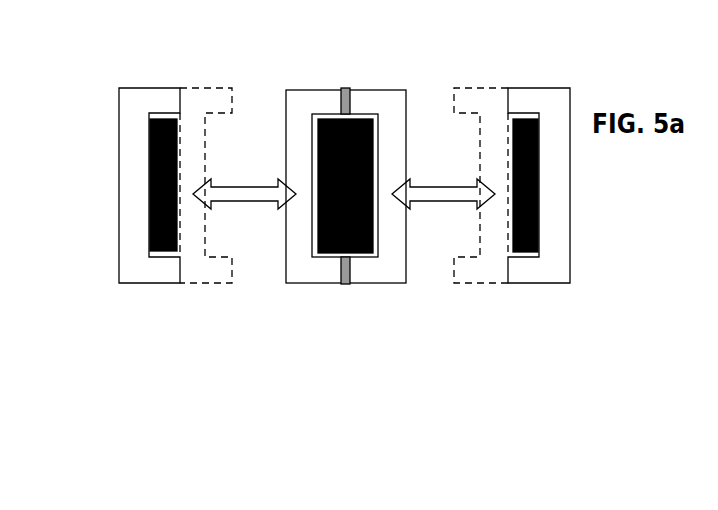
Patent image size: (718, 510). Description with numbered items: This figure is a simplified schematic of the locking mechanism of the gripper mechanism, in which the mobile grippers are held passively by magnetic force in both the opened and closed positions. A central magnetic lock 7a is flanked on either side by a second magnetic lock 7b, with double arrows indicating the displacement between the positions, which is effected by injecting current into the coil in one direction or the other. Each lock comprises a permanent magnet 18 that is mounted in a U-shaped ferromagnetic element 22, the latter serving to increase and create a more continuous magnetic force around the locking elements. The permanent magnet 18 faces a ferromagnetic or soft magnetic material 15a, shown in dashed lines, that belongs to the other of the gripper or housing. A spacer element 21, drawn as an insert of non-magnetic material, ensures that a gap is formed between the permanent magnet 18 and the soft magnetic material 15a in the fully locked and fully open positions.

The magnetic lock 7a is at (389, 202).
The second magnetic lock 7b is at (344, 247).
The soft magnetic material 15a is at (206, 283).
The permanent magnet 18 is at (160, 252).
The spacer element 21 is at (346, 86).
The U-shaped ferromagnetic element 22 is at (123, 193).